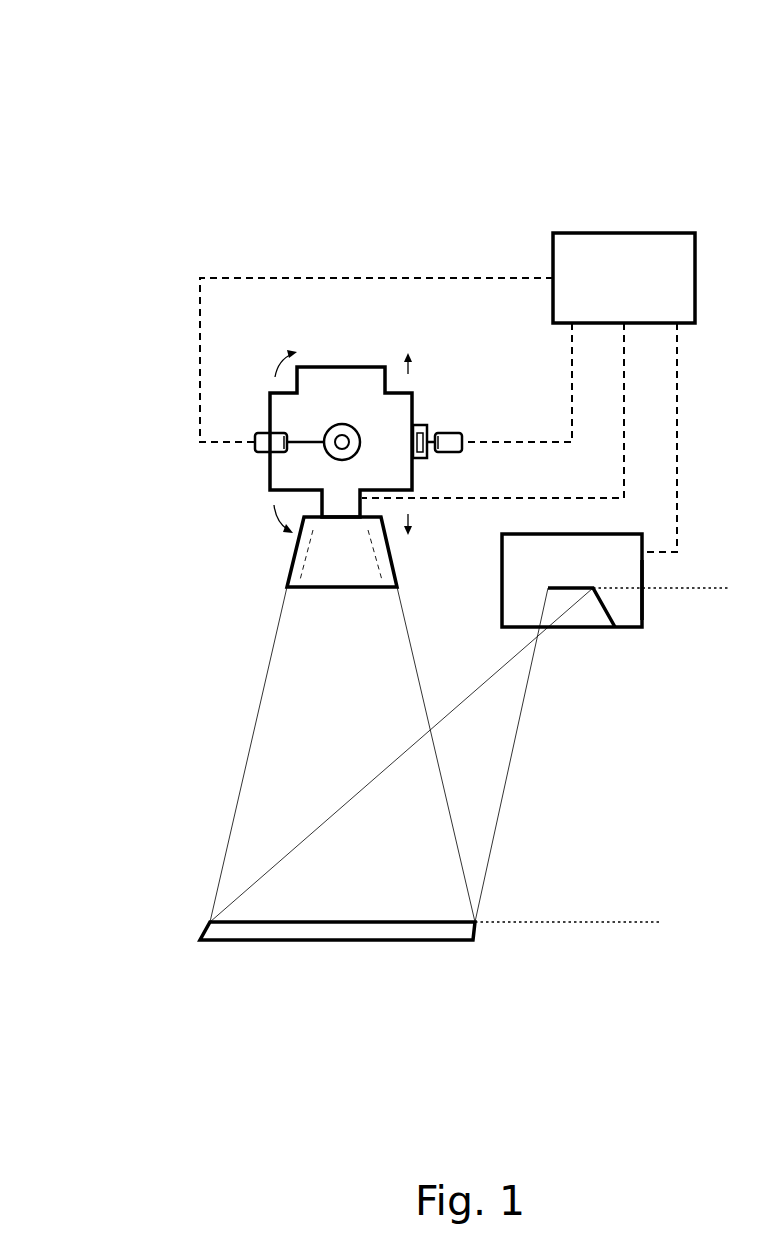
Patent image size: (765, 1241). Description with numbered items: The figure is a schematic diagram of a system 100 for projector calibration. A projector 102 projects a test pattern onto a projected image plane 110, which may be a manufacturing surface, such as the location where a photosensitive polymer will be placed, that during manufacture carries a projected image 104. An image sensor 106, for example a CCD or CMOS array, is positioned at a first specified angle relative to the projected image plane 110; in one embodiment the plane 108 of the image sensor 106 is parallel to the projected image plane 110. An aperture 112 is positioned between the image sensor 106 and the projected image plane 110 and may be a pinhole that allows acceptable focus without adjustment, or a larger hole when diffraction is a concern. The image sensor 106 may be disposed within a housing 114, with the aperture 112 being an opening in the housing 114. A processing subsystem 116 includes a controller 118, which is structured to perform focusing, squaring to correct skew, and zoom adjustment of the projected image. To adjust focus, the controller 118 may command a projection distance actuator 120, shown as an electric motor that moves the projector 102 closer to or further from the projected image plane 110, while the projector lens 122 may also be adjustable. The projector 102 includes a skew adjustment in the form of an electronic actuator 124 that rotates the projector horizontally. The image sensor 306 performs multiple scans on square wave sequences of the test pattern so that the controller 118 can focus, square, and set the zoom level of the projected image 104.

The system 100 is at (103, 60).
The projector 102 is at (268, 489).
The projected image 104 is at (370, 920).
The image sensor 106 is at (612, 631).
The plane of the image sensor 108 is at (713, 586).
The projected image plane 110 is at (612, 920).
The aperture 112 is at (545, 630).
The housing 114 is at (500, 604).
The processing subsystem 116 is at (628, 232).
The controller 118 is at (642, 289).
The projection distance actuator 120 is at (463, 432).
The projector lens 122 is at (290, 568).
The electronic actuator 124 is at (258, 432).
The image sensor 306 is at (644, 614).